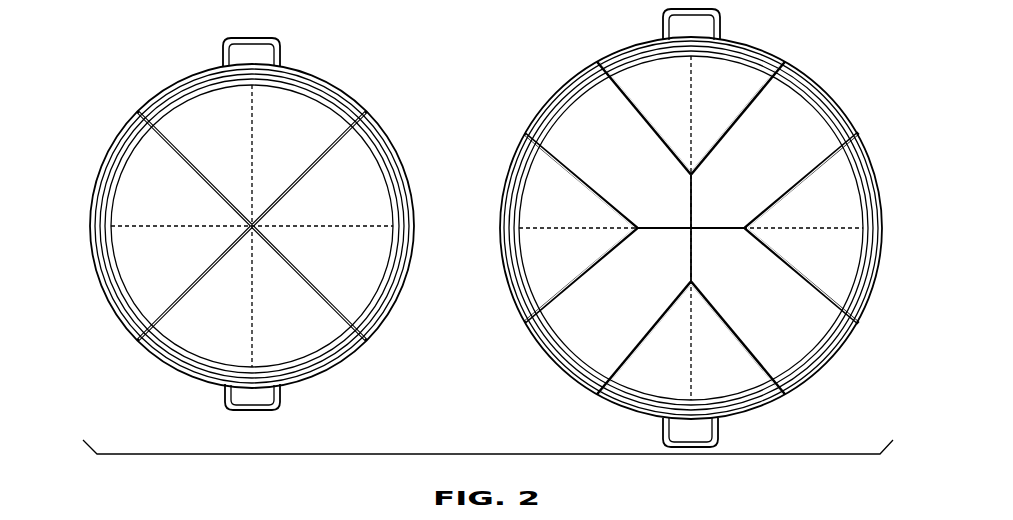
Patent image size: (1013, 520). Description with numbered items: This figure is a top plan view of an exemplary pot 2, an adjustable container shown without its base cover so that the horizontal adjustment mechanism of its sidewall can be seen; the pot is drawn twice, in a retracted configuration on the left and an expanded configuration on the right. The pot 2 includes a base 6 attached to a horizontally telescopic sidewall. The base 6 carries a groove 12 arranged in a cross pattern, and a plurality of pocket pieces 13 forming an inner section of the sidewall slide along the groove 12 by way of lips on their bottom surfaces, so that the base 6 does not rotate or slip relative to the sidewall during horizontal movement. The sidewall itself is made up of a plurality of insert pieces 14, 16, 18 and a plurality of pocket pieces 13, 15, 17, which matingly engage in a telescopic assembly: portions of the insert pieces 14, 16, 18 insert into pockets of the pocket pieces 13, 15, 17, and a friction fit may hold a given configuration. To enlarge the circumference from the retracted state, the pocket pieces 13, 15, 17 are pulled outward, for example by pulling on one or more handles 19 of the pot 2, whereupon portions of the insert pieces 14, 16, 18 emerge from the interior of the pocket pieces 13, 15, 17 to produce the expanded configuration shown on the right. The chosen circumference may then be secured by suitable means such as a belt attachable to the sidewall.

The exemplary pot 2 is at (92, 78).
The base 6 is at (605, 156).
The groove 12 is at (253, 133).
The pocket pieces 13 is at (229, 139).
The insert piece 14 is at (813, 81).
The pocket piece 15 is at (405, 190).
The insert piece 16 is at (830, 93).
The pocket piece 17 is at (415, 223).
The insert piece 18 is at (845, 115).
The handles 19 is at (281, 44).